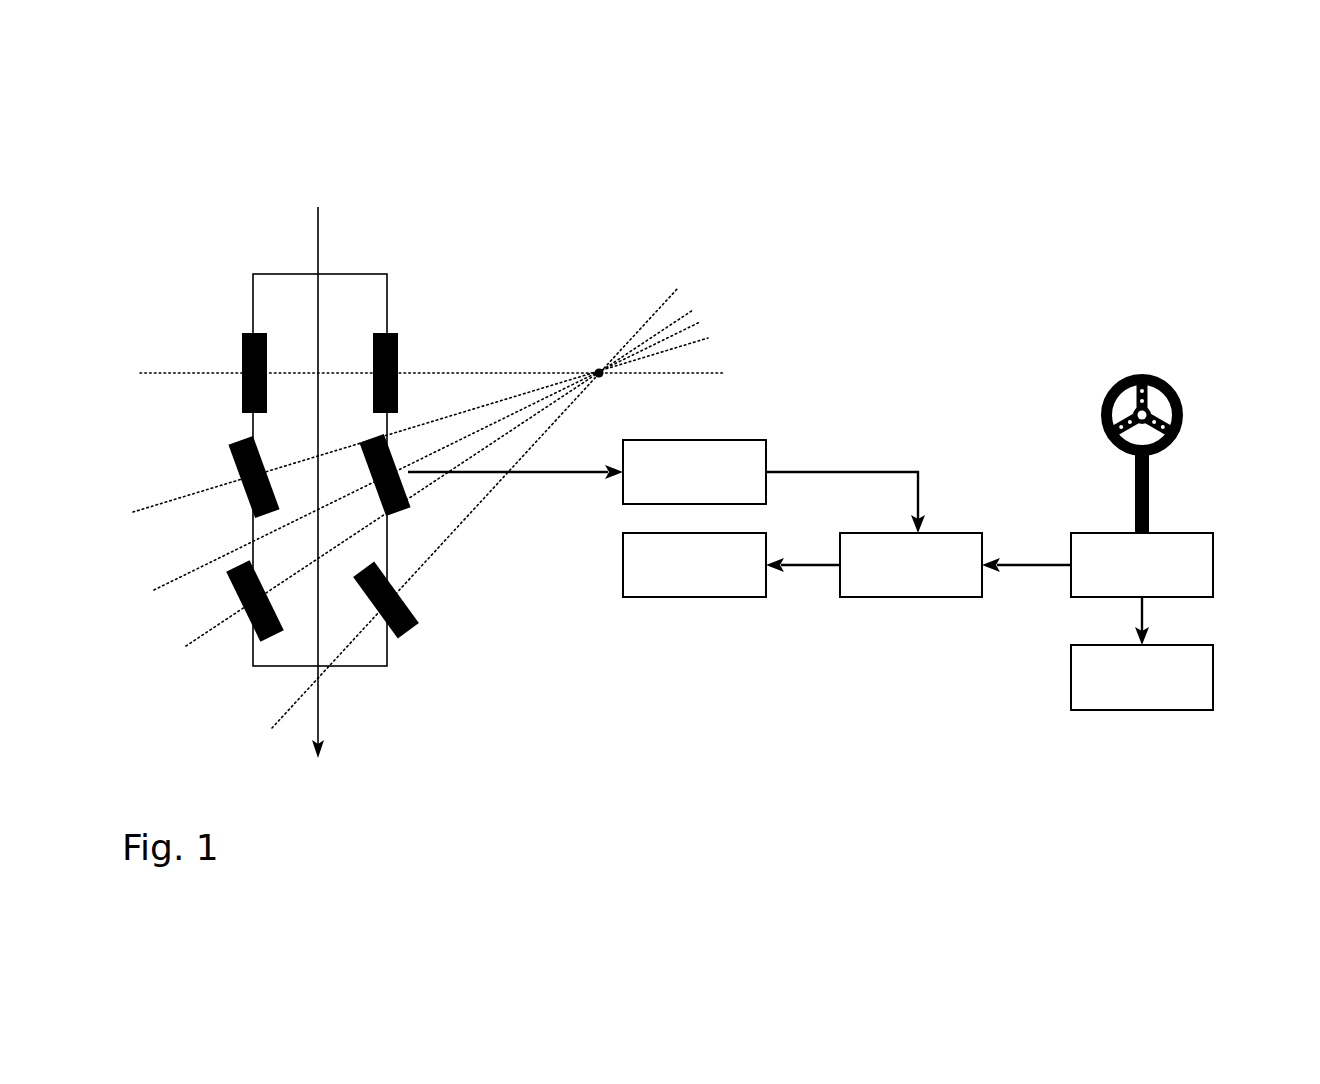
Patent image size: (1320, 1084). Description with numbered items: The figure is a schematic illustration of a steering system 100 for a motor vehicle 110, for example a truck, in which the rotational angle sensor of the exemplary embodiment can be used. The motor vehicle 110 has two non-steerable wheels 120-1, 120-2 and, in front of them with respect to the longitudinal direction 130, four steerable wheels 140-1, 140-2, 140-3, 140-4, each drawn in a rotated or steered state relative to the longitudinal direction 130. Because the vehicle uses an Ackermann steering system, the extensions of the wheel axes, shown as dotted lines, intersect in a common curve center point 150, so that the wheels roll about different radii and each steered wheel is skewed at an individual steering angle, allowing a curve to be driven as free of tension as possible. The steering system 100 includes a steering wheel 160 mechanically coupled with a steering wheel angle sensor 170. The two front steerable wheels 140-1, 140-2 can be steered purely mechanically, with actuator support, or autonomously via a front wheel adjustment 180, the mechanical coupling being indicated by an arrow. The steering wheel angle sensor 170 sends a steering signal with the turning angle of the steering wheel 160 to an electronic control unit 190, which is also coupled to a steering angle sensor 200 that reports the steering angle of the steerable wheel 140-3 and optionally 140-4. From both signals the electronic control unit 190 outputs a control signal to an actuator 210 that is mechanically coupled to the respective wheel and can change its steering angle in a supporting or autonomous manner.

The steering system 100 is at (1187, 156).
The motor vehicle 110 is at (367, 274).
The non-steerable wheel 120-1 is at (398, 348).
The non-steerable wheel 120-2 is at (242, 352).
The longitudinal direction 130 is at (318, 243).
The steerable wheel 140-1 is at (418, 620).
The steerable wheel 140-2 is at (232, 594).
The steerable wheel 140-3 is at (412, 505).
The steerable wheel 140-4 is at (235, 458).
The common curve center point 150 is at (601, 368).
The steering wheel 160 is at (1183, 410).
The steering wheel angle sensor 170 is at (1213, 548).
The front wheel adjustment 180 is at (1215, 675).
The electronic control unit 190 is at (948, 533).
The steering angle sensor 200 is at (740, 440).
The actuator 210 is at (672, 597).